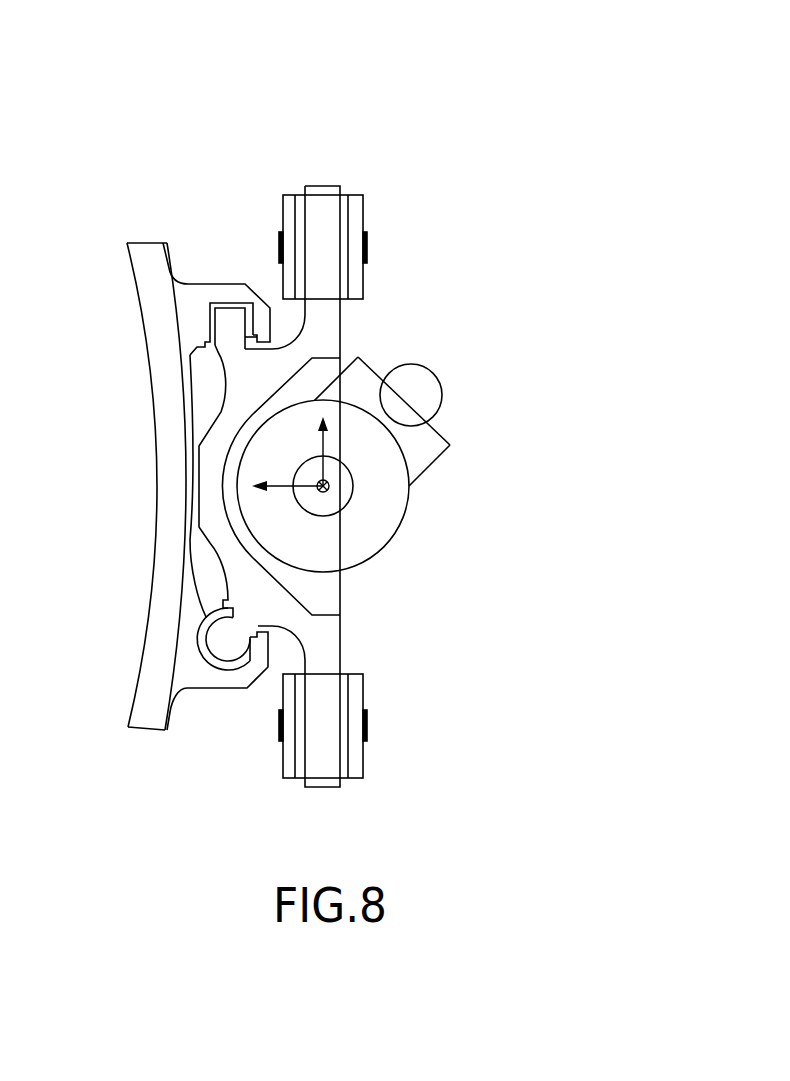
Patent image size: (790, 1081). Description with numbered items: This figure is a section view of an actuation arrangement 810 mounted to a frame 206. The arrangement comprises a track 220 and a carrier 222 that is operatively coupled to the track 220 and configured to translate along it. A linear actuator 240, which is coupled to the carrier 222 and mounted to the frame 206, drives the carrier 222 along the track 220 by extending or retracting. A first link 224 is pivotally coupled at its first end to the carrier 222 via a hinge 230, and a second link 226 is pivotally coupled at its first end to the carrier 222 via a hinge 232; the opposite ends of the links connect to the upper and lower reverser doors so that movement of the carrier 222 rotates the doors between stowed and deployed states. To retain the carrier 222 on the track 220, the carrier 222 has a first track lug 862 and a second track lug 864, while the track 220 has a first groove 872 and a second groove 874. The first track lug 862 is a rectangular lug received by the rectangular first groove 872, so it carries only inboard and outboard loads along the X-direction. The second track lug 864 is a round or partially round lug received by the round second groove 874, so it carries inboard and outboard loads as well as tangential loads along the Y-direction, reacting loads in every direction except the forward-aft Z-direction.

The actuation arrangement 810 is at (239, 94).
The frame 206 is at (157, 377).
The track 220 is at (220, 282).
The carrier 222 is at (210, 493).
The first link 224 is at (360, 195).
The second link 226 is at (352, 780).
The hinge 230 is at (370, 248).
The hinge 232 is at (367, 728).
The linear actuator 240 is at (388, 546).
The first track lug 862 is at (213, 325).
The second track lug 864 is at (218, 640).
The first groove 872 is at (207, 313).
The second groove 874 is at (202, 665).